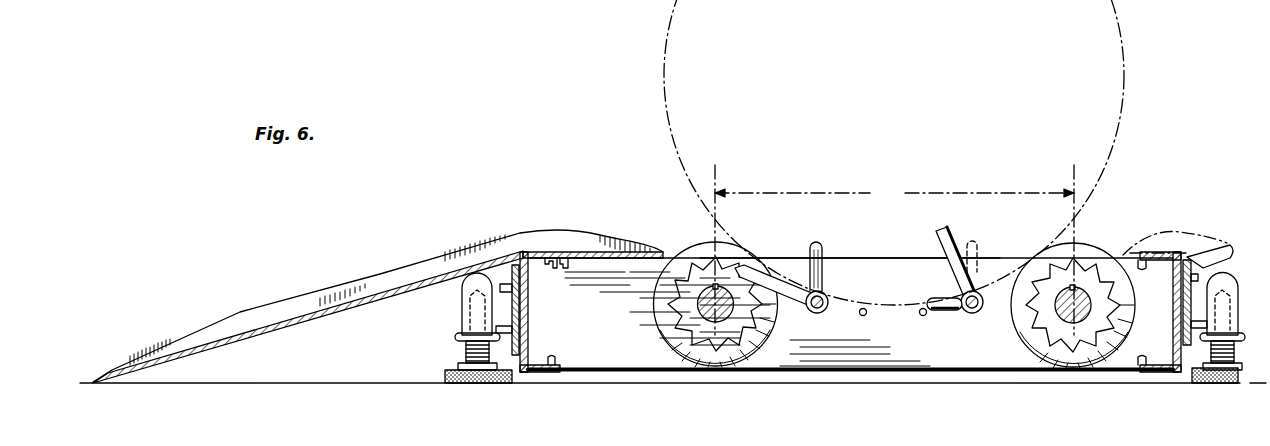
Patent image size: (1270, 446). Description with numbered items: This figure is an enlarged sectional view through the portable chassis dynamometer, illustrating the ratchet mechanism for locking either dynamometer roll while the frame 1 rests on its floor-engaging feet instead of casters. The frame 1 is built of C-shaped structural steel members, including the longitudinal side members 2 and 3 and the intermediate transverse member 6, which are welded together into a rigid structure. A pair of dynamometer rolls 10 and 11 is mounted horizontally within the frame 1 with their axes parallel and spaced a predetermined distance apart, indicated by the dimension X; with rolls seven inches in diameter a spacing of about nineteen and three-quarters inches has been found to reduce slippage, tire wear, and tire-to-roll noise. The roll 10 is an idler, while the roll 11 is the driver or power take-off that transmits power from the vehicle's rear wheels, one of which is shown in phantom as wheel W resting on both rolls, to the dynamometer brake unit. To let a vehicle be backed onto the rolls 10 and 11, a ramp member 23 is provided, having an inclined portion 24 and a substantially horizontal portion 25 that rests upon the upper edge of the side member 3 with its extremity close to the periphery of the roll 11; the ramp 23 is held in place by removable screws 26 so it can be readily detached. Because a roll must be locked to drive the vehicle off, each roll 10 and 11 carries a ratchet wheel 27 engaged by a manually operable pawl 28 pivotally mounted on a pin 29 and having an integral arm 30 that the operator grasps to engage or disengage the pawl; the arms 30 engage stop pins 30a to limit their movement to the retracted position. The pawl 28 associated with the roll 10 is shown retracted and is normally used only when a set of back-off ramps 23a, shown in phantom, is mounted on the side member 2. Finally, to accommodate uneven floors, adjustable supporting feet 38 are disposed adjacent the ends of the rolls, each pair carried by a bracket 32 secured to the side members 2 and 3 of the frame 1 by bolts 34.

The portable chassis dynamometer frame 1 is at (895, 240).
The side member 2 is at (1158, 372).
The side member 3 is at (545, 372).
The intermediate transverse member 6 is at (958, 372).
The dynamometer roll 10 is at (1091, 250).
The dynamometer roll 11 is at (686, 250).
The ramp member 23 is at (199, 332).
The back-off ramps 23a is at (1152, 240).
The inclined portion 24 is at (280, 329).
The horizontal portion 25 is at (605, 242).
The removable screws 26 is at (540, 252).
The ratchet wheel 27 is at (656, 322).
The pawl 28 is at (945, 233).
The pin 29 is at (822, 313).
The arm 30 is at (816, 243).
The stop pin 30a is at (868, 315).
The bracket 32 is at (512, 312).
The bolts 34 is at (507, 272).
The adjustable supporting feet 38 is at (446, 375).
The vehicle wheel W is at (1118, 92).
The roll spacing dimension X is at (894, 250).